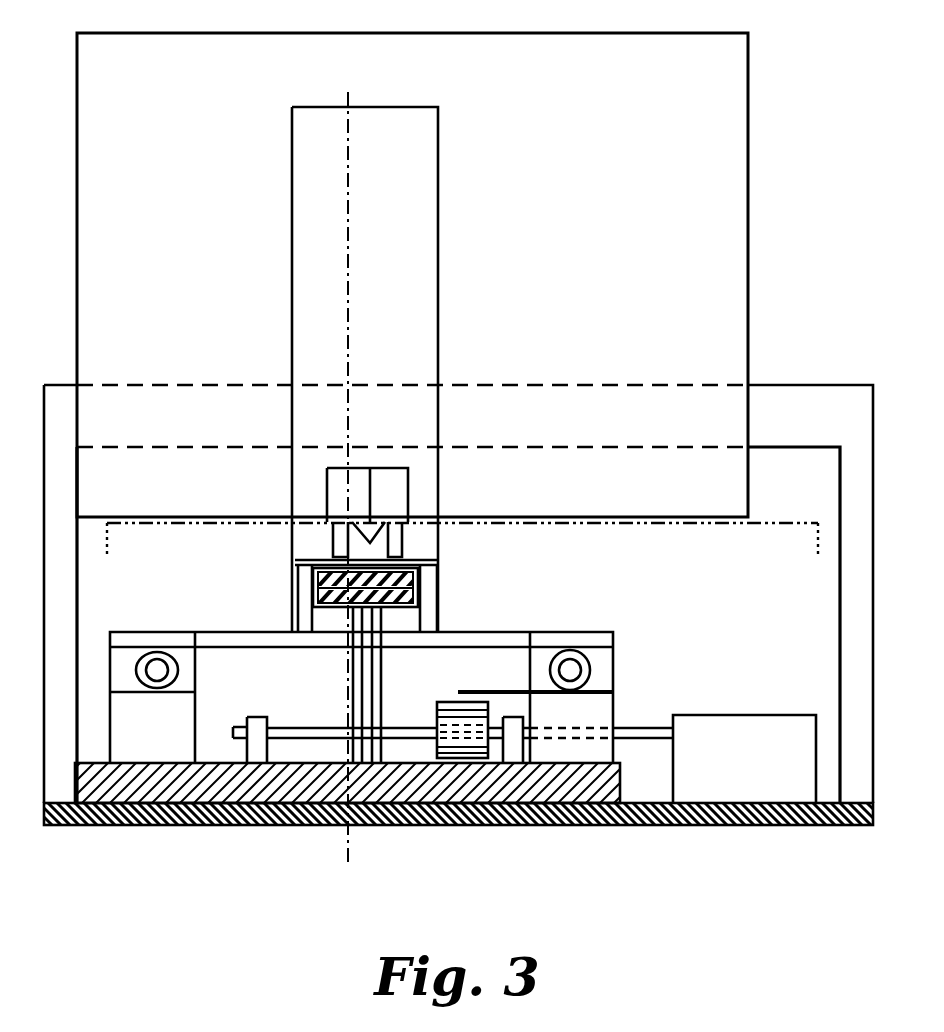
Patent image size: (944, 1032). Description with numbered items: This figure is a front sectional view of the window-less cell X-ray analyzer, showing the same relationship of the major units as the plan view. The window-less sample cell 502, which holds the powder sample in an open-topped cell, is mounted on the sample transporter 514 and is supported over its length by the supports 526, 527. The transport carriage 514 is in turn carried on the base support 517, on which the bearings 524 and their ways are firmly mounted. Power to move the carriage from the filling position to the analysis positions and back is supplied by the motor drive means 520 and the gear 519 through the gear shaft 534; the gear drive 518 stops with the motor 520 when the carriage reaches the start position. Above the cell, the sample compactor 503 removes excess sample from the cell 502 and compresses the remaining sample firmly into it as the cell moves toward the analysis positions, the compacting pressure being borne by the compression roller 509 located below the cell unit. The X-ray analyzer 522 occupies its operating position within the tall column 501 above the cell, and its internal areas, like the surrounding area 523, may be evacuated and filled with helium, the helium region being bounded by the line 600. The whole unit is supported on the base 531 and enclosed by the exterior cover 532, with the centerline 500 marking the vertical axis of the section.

The central axis 500 is at (347, 482).
The column 501 is at (388, 272).
The window-less sample cell 502 is at (370, 548).
The sample compactor 503 is at (375, 500).
The compression roller 509 is at (390, 583).
The sample transporter 514 is at (302, 613).
The base support 517 is at (227, 785).
The gear drive 518 is at (458, 692).
The gear 519 is at (448, 762).
The motor drive means 520 is at (703, 740).
The X-ray analyzer 522 is at (540, 243).
The helium-filled area 523 is at (740, 610).
The bearings 524 is at (169, 670).
The support 526 is at (408, 532).
The support 527 is at (340, 540).
The base 531 is at (688, 825).
The exterior cover 532 is at (766, 427).
The gear shaft 534 is at (315, 732).
The boundary line 600 is at (459, 557).